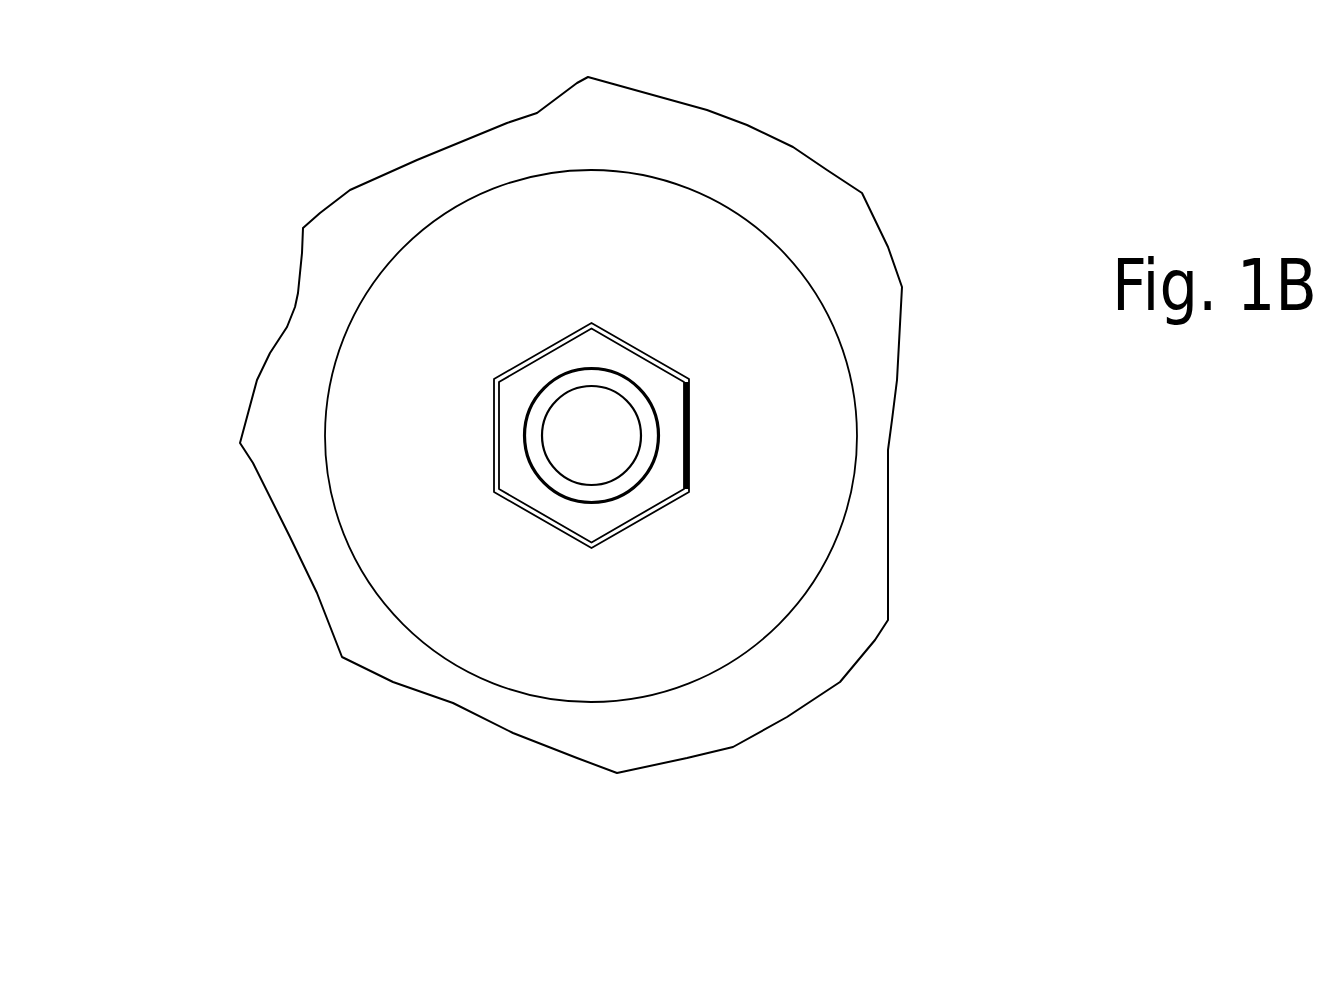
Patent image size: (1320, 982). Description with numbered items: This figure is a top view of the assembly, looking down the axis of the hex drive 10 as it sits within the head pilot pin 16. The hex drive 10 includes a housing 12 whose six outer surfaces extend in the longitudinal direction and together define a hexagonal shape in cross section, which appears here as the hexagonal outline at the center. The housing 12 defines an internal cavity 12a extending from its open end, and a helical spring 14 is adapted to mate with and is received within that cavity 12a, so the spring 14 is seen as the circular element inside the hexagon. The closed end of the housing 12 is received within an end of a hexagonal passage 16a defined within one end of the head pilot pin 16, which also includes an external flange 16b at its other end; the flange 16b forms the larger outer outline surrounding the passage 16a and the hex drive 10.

The hex drive 10 is at (581, 318).
The housing 12 is at (485, 318).
The internal cavity 12a is at (620, 450).
The helical spring 14 is at (761, 300).
The head pilot pin 16 is at (539, 452).
The hexagonal passage 16a is at (660, 436).
The external flange 16b is at (605, 442).